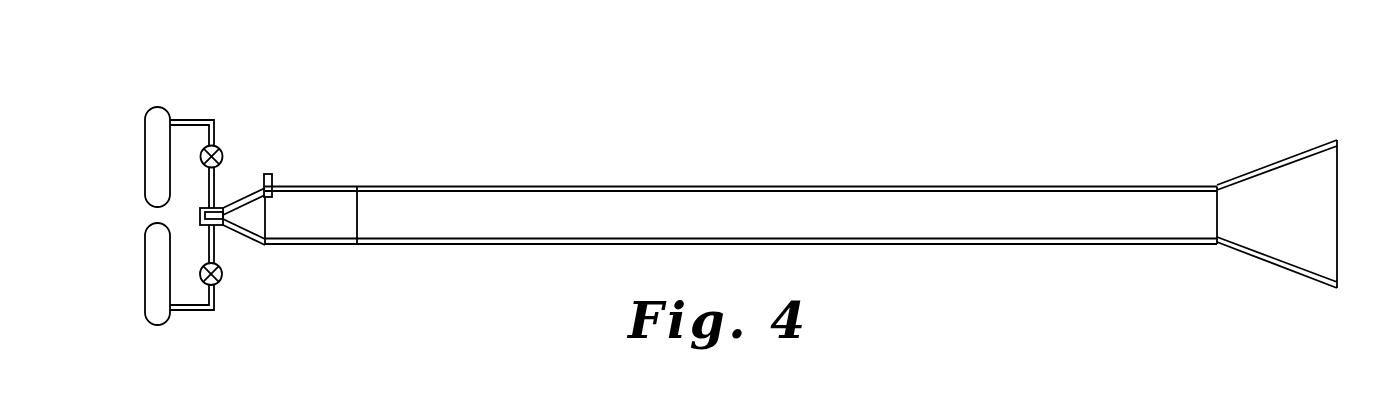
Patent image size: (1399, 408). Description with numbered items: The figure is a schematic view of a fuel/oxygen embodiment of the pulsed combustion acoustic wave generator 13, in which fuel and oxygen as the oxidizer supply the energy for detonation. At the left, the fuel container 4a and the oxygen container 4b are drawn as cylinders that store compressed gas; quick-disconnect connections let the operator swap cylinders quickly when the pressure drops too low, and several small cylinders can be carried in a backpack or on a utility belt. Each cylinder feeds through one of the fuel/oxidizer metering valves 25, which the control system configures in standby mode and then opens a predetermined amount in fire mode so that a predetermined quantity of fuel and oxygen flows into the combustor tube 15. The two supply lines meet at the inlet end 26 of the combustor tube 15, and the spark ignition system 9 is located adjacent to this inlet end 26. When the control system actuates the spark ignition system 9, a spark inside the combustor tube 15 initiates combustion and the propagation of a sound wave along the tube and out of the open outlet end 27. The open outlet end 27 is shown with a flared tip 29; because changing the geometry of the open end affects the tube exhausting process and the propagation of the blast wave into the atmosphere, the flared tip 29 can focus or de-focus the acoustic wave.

The fuel container 4a is at (155, 143).
The oxygen container 4b is at (153, 255).
The fuel/oxidizer metering valves 25 is at (222, 156).
The inlet end 26 is at (228, 216).
The spark ignition system 9 is at (272, 182).
The pulsed combustion acoustic wave generator 13 is at (980, 168).
The combustor tube 15 is at (948, 244).
The open outlet end 27 is at (1308, 197).
The flared tip 29 is at (1290, 163).